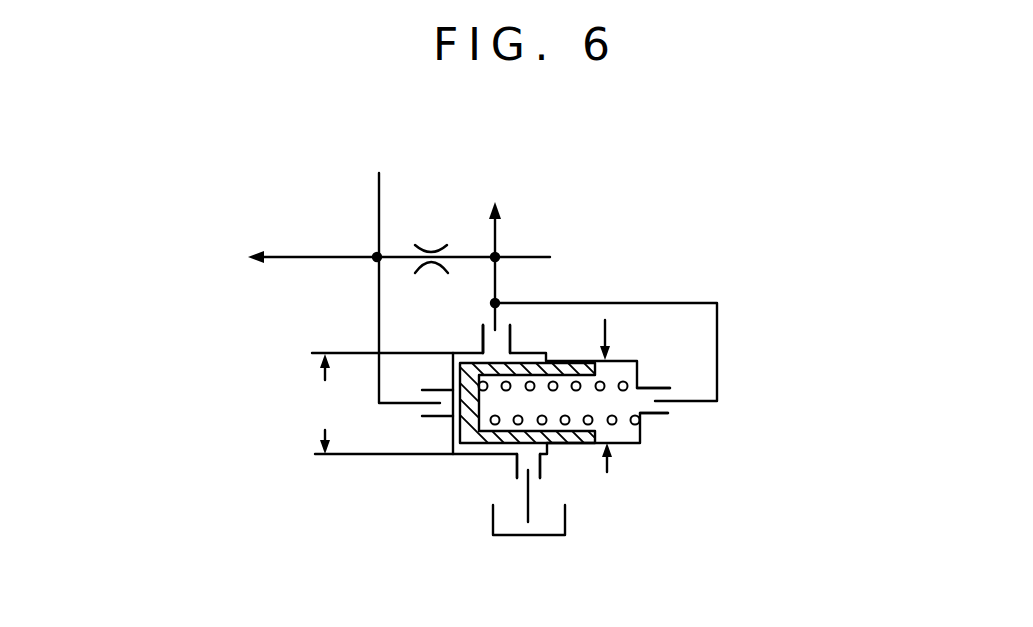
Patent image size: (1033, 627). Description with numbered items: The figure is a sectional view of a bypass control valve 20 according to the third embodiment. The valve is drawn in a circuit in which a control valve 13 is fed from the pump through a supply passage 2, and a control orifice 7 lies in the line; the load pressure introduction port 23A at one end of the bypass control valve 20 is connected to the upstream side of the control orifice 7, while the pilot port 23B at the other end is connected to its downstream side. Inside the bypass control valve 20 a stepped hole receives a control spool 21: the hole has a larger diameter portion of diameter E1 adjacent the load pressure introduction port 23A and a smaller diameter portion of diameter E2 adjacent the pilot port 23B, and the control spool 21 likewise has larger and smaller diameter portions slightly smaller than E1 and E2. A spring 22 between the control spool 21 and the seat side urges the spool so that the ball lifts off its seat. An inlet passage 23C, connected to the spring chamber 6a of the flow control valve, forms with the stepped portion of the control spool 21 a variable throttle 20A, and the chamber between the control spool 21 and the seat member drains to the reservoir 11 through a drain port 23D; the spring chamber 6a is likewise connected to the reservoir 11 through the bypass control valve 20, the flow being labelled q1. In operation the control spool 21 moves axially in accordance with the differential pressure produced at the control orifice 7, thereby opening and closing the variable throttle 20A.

The supply passage 2 is at (377, 205).
The control orifice 7 is at (431, 242).
The spring chamber 6a is at (491, 249).
The reservoir 11 is at (565, 527).
The control valve 13 is at (277, 257).
The bypass control valve 20 is at (570, 361).
The variable throttle 20A is at (507, 346).
The control spool 21 is at (485, 447).
The spring 22 is at (625, 382).
The load pressure introduction port 23A is at (437, 392).
The pilot port 23B is at (650, 415).
The inlet passage 23C is at (485, 335).
The drain port 23D is at (540, 474).
The diameter of larger diameter portion E1 is at (376, 404).
The diameter of smaller diameter portion E2 is at (609, 358).
The flow q1 is at (630, 352).